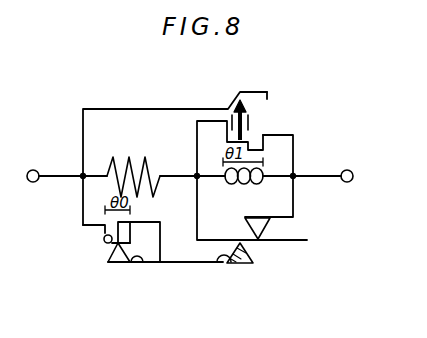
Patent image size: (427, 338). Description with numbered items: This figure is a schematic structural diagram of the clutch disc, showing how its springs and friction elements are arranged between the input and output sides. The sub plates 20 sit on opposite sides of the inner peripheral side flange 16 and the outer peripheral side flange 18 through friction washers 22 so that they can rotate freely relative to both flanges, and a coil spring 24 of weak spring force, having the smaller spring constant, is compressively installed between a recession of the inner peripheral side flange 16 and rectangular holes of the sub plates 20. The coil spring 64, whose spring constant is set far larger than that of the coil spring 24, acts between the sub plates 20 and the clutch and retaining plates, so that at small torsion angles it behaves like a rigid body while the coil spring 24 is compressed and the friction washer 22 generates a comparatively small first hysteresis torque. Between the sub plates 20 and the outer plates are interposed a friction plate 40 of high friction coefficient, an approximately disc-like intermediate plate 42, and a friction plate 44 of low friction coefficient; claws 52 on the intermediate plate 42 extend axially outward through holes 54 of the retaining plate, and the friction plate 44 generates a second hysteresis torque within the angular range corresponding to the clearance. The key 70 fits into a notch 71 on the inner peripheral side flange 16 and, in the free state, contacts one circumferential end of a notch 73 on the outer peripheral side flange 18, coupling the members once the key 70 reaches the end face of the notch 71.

The outer peripheral side flange 18 is at (133, 109).
The notch 73 is at (273, 101).
The key 70 is at (245, 109).
The inner peripheral side flange 16 is at (293, 141).
The notch 71 is at (264, 147).
The coil spring 64 is at (112, 160).
The intermediate plate 42 is at (161, 232).
The sub plate 20 is at (83, 225).
The claw 52 is at (105, 236).
The hole 54 is at (110, 243).
The friction plate 44 is at (143, 262).
The friction plate 40 is at (218, 262).
The friction washer 22 is at (268, 232).
The coil spring 24 is at (257, 183).